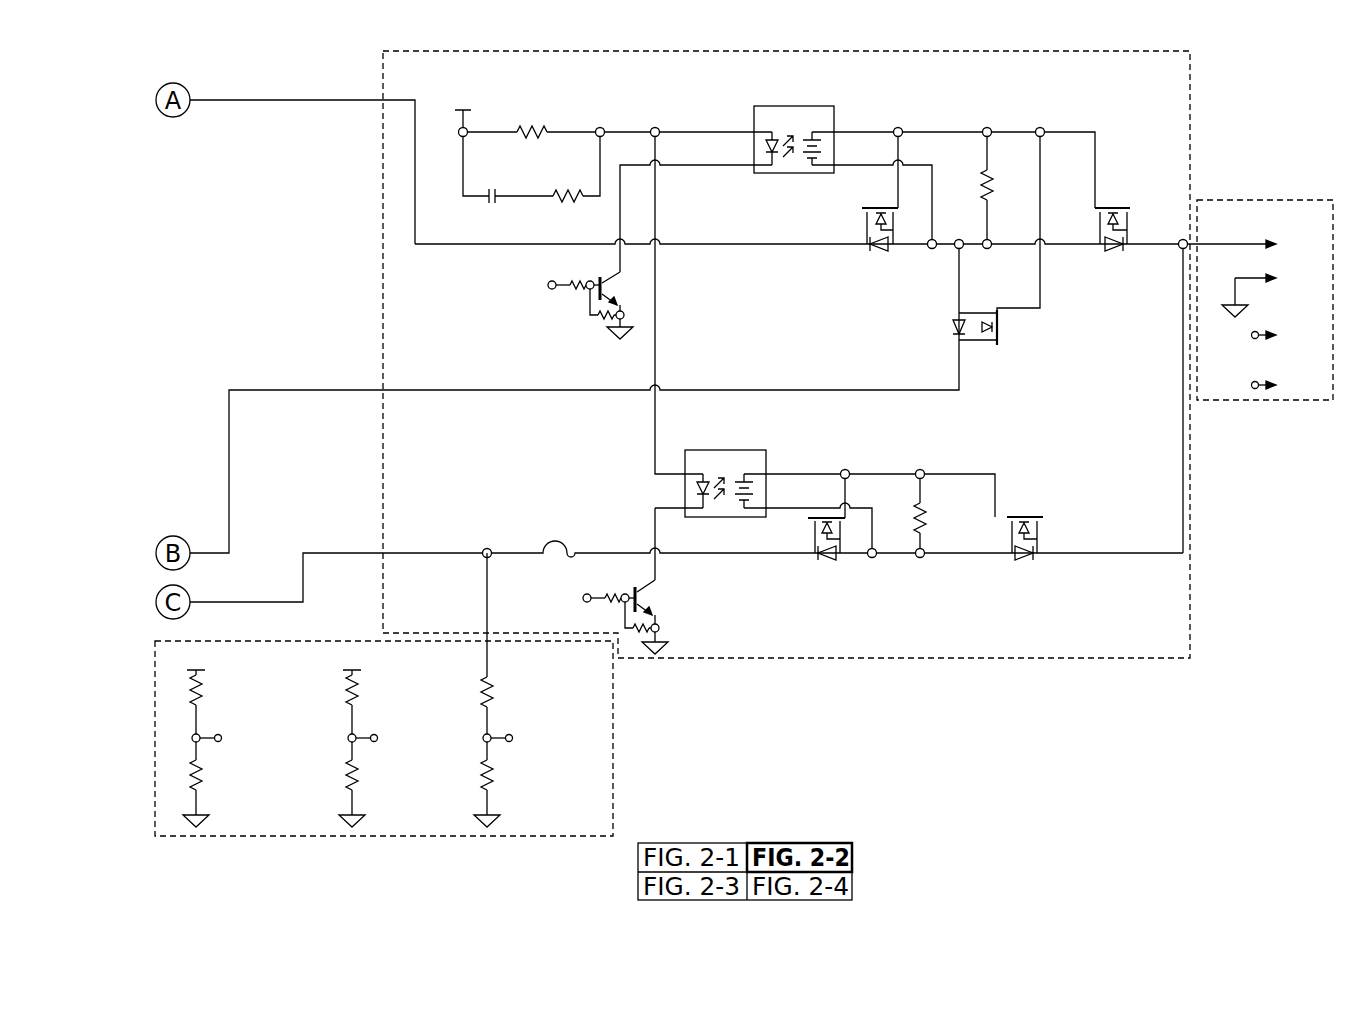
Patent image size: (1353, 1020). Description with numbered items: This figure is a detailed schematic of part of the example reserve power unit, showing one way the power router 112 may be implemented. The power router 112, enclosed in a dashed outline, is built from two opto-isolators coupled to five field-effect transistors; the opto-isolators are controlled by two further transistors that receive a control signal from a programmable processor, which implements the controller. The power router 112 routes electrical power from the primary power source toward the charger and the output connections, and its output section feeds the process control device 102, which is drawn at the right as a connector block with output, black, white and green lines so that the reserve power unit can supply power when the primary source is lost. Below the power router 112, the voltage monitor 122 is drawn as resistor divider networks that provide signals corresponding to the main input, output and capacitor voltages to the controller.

The power router 112 is at (1190, 108).
The process control device 102 is at (1267, 200).
The voltage monitor 122 is at (613, 718).